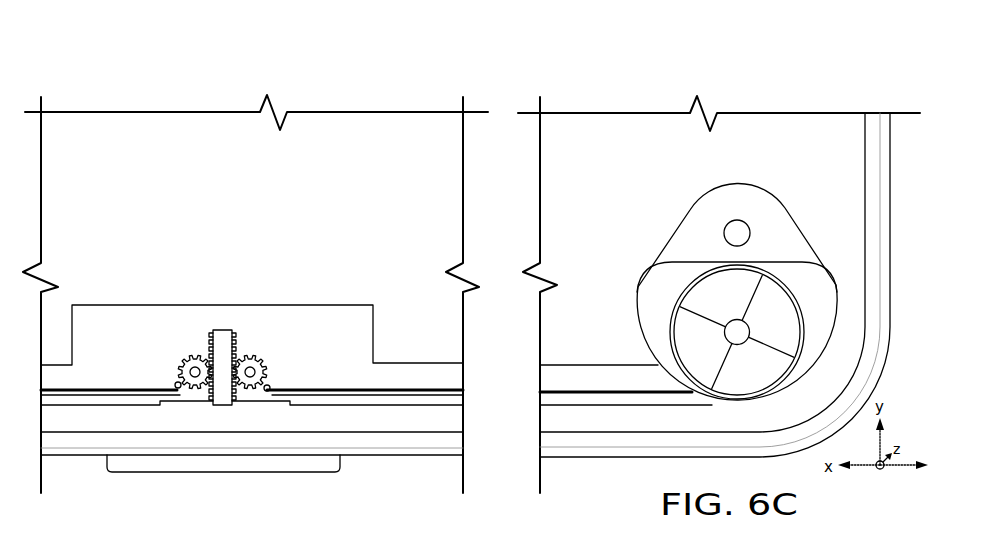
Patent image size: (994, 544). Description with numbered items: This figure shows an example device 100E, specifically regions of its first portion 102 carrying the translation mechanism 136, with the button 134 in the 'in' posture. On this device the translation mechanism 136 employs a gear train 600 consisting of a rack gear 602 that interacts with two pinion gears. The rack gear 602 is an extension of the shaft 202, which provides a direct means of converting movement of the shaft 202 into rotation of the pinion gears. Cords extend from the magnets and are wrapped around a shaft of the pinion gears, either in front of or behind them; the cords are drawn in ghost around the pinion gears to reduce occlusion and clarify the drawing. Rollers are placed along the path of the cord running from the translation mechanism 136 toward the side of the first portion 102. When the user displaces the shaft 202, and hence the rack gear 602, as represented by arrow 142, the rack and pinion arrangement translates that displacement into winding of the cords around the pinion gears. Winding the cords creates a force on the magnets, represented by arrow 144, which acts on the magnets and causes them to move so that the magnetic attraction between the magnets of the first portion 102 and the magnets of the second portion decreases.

The device 100E is at (241, 90).
The translation mechanism 136 is at (171, 221).
The rack gear 602 is at (223, 330).
The gear train 600 is at (233, 301).
The arrow 142 is at (222, 288).
The shaft 202 is at (220, 404).
The button 134 is at (260, 475).
The first portion 102 is at (823, 110).
The arrow 144 is at (613, 387).